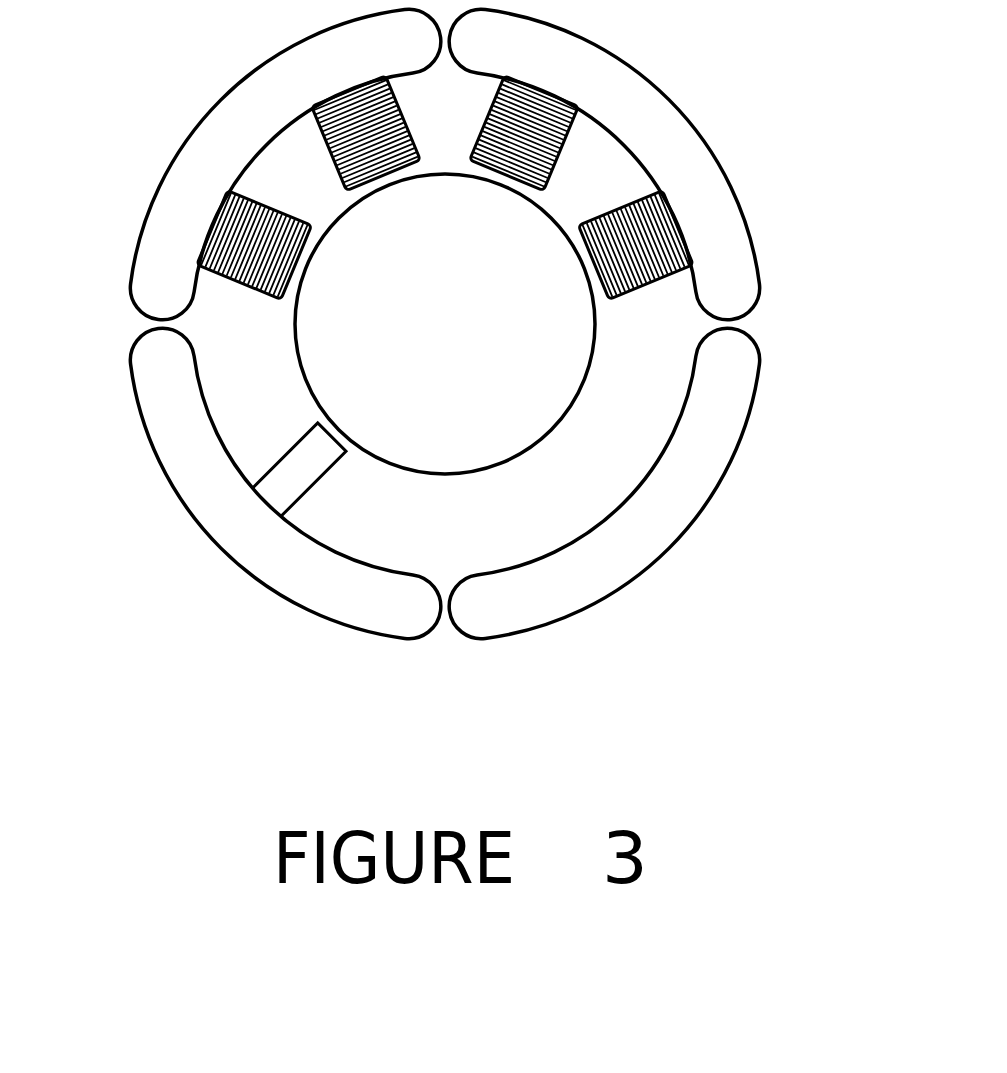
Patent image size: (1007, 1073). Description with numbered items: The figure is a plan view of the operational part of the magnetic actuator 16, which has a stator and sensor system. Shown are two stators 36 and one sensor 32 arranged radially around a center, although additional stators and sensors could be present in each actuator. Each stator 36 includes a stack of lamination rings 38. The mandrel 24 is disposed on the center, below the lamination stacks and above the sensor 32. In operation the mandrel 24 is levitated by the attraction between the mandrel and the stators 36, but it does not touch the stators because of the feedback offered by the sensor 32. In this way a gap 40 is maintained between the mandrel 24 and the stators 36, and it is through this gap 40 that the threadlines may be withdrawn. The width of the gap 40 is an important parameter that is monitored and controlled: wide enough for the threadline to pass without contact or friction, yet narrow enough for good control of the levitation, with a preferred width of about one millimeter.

The magnetic actuator 16 is at (462, 322).
The mandrel 24 is at (527, 430).
The sensor 32 is at (265, 503).
The stator 36 is at (237, 82).
The lamination rings 38 is at (230, 281).
The gap 40 is at (597, 300).